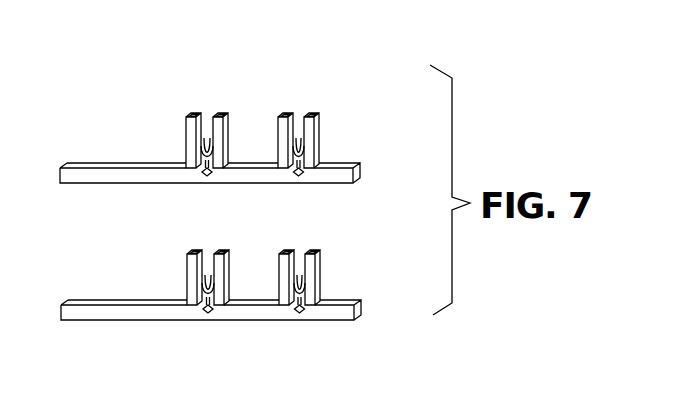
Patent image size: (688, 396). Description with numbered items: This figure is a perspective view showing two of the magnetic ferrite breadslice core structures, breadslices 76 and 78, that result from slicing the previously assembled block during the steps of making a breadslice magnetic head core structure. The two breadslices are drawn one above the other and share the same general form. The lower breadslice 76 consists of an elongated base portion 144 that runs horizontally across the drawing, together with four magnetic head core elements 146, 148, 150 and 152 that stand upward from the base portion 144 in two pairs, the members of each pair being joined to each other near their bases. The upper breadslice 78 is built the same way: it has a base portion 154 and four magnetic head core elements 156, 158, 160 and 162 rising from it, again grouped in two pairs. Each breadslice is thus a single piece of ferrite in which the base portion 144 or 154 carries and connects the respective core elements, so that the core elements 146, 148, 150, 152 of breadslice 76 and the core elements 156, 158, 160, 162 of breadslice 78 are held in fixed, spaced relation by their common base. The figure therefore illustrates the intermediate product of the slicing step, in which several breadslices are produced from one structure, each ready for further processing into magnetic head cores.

The breadslice 76 is at (241, 261).
The breadslice 78 is at (242, 127).
The elongated base portion 144 is at (97, 302).
The magnetic head core element 146 is at (187, 252).
The magnetic head core element 148 is at (224, 252).
The magnetic head core element 150 is at (289, 253).
The magnetic head core element 152 is at (313, 251).
The base portion 154 is at (101, 165).
The magnetic head core element 156 is at (186, 115).
The magnetic head core element 158 is at (222, 115).
The magnetic head core element 160 is at (289, 116).
The magnetic head core element 162 is at (313, 112).